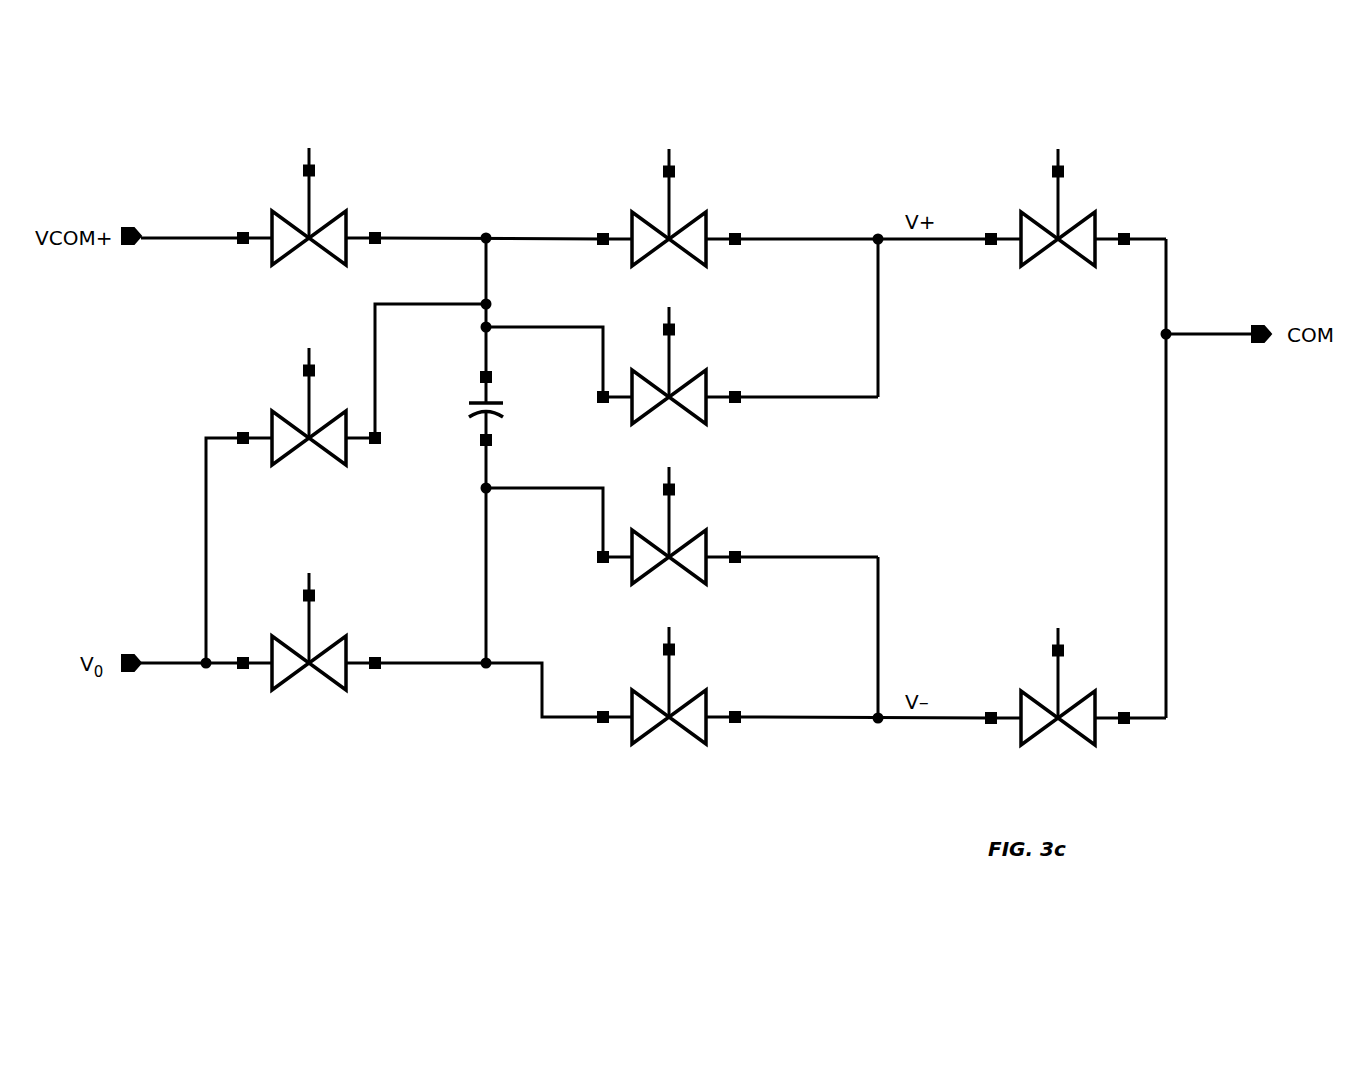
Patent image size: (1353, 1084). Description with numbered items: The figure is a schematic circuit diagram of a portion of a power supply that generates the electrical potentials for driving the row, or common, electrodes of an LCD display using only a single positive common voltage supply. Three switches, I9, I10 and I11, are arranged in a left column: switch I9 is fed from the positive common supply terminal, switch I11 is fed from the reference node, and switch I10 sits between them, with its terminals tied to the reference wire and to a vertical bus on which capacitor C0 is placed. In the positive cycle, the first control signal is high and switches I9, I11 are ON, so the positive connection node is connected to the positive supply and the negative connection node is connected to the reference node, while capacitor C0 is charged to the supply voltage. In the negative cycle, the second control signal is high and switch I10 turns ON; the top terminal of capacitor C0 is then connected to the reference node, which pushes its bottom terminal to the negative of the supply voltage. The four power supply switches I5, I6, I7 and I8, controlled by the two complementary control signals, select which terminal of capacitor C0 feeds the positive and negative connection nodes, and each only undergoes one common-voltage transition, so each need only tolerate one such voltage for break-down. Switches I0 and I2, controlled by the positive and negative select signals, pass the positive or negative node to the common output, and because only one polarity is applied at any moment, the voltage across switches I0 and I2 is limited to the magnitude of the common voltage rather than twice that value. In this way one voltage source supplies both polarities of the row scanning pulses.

The switch I9 is at (309, 217).
The power supply switch I5 is at (669, 218).
The switch I0 is at (1058, 218).
The power supply switch I6 is at (669, 376).
The switch I10 is at (309, 417).
The power supply switch I7 is at (669, 536).
The switch I11 is at (309, 642).
The power supply switch I8 is at (669, 696).
The switch I2 is at (1058, 697).
The capacitor C0 is at (508, 409).